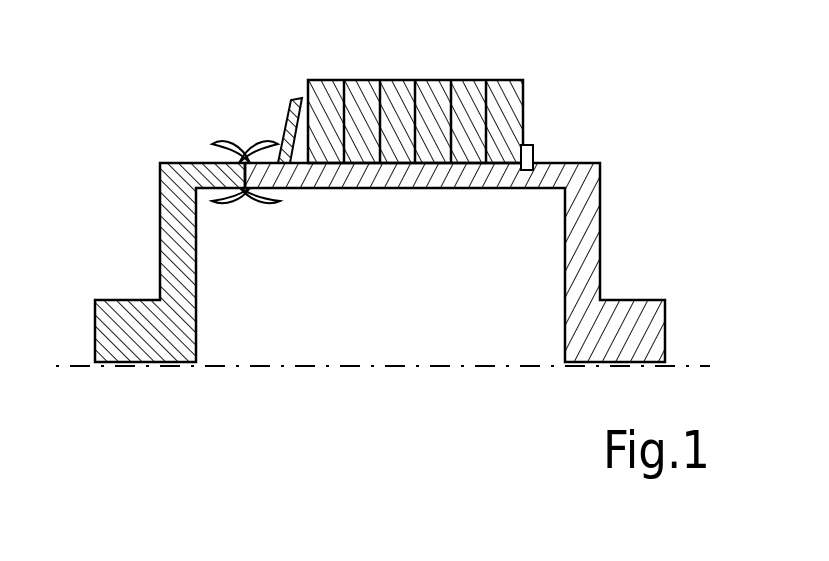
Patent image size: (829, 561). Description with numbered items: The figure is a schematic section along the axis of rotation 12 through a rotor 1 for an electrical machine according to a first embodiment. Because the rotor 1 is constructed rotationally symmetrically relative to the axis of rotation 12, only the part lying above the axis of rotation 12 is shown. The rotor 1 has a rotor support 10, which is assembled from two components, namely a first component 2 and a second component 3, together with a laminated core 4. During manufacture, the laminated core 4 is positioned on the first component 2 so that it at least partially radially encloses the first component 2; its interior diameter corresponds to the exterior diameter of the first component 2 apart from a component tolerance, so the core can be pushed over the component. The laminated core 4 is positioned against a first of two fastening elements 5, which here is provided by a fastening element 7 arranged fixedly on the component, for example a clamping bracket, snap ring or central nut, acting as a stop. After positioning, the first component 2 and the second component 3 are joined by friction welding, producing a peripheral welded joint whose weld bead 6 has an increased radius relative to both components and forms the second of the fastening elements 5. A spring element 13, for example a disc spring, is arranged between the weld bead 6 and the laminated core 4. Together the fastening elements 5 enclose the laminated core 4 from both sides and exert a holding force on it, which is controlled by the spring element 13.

The rotor 1 is at (379, 296).
The first component 2 is at (585, 212).
The second component 3 is at (168, 248).
The laminated core 4 is at (397, 107).
The fastening elements 5 is at (512, 182).
The weld bead 6 is at (240, 163).
The fastening element 7 is at (527, 145).
The rotor support 10 is at (450, 306).
The axis of rotation 12 is at (303, 365).
The spring element 13 is at (296, 100).